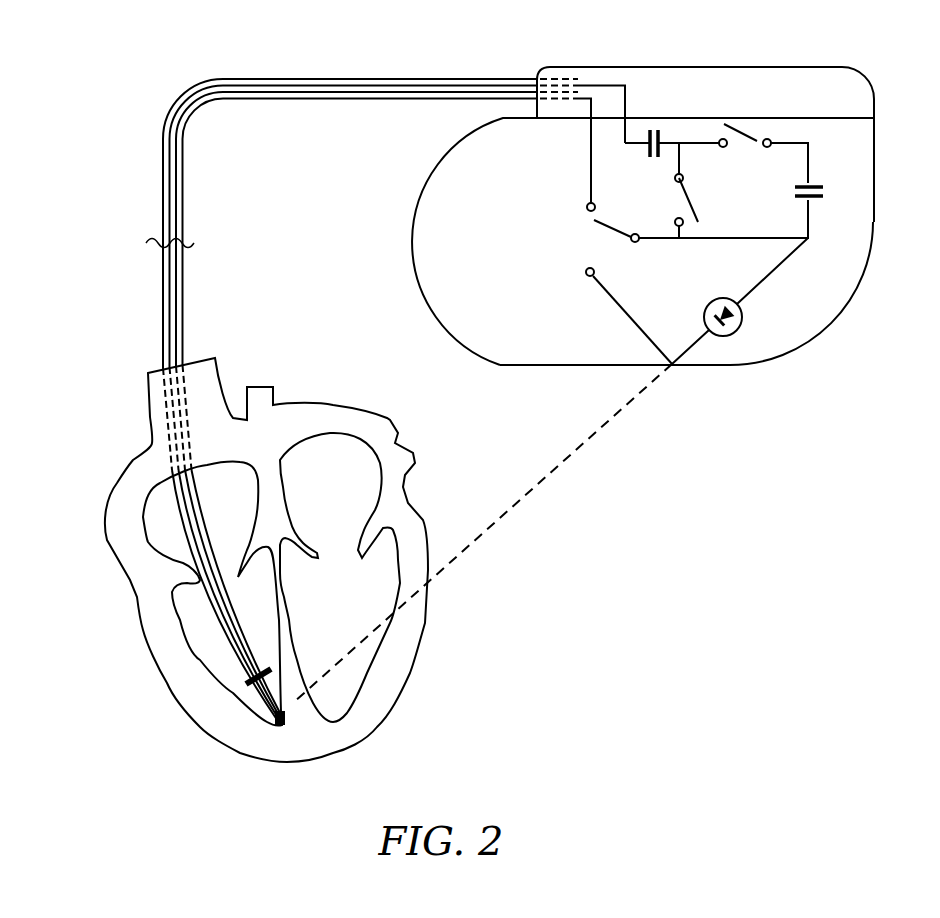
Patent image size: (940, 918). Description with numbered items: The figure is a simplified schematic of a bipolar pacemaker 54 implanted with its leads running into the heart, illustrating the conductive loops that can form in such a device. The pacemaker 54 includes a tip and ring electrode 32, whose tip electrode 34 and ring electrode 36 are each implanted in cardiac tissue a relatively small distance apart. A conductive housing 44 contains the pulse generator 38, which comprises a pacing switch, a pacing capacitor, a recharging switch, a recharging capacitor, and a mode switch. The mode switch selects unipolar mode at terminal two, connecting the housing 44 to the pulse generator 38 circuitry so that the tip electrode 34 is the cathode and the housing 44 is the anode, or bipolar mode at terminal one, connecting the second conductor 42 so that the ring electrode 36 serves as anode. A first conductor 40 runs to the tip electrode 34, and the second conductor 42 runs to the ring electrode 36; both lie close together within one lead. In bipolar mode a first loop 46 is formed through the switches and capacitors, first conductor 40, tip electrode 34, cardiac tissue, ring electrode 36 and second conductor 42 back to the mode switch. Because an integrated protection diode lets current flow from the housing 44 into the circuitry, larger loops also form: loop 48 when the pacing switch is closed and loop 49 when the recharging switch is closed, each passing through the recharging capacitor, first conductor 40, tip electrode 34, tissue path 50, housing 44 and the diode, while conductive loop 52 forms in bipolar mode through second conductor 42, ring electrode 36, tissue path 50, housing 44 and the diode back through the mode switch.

The tip and ring electrode 32 is at (223, 710).
The tip electrode 34 is at (243, 682).
The ring electrode 36 is at (282, 728).
The pulse generator 38 is at (855, 153).
The first conductor 40 is at (166, 129).
The second conductor 42 is at (192, 137).
The housing 44 is at (770, 363).
The first loop 46 is at (195, 97).
The loop 48 is at (220, 82).
The loop 49 is at (398, 78).
The tissue path 50 is at (555, 468).
The conductive loop 52 is at (243, 103).
The bipolar pacemaker 54 is at (678, 538).